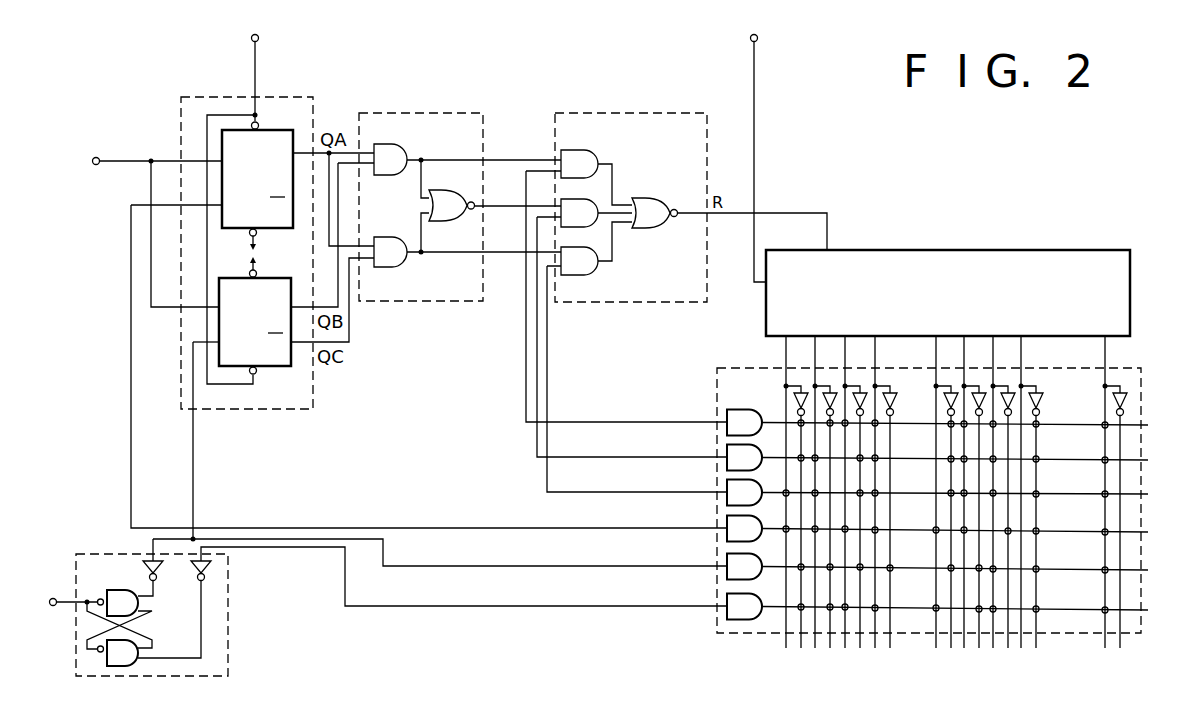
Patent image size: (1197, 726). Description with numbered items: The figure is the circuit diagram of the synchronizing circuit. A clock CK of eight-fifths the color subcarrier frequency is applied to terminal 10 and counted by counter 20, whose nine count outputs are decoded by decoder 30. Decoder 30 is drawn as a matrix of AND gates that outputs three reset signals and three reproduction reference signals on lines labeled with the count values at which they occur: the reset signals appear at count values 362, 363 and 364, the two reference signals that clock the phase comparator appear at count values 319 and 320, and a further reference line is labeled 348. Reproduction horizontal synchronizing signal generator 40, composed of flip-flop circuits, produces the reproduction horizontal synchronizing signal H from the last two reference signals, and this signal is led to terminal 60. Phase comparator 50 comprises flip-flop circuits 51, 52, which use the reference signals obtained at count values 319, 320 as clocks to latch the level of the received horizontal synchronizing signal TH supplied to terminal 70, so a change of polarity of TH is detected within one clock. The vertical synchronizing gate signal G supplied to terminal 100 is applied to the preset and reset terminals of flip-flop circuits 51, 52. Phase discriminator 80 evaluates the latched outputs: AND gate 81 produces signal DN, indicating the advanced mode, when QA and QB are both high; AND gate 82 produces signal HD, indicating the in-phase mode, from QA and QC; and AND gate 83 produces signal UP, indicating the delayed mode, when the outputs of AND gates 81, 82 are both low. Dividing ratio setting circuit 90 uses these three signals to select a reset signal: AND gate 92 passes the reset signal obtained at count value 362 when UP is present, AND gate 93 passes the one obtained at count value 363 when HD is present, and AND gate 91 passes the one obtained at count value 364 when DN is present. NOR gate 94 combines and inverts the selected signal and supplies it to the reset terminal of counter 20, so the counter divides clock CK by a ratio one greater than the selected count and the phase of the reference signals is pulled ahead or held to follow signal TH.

The terminal 10 is at (757, 42).
The counter 20 is at (1035, 250).
The decoder 30 is at (932, 490).
The reproduction horizontal synchronizing signal generator 40 is at (228, 580).
The phase comparator 50 is at (223, 239).
The flip-flop circuit 51 is at (276, 130).
The flip-flop circuit 52 is at (275, 267).
The terminal 60 is at (58, 587).
The terminal 70 is at (100, 157).
The phase discriminator 80 is at (460, 185).
The AND gate 81 is at (400, 147).
The AND gate 82 is at (391, 237).
The AND gate 83 is at (436, 197).
The dividing ratio setting circuit 90 is at (626, 281).
The AND gate 91 is at (583, 152).
The AND gate 92 is at (601, 203).
The AND gate 93 is at (598, 268).
The NOR gate 94 is at (656, 199).
The terminal 100 is at (259, 41).
The count value 364 is at (978, 425).
The count value 362 is at (978, 460).
The count value 363 is at (978, 494).
The count value 319 is at (978, 532).
The count value 320 is at (978, 570).
The decoder output line 348 is at (978, 610).